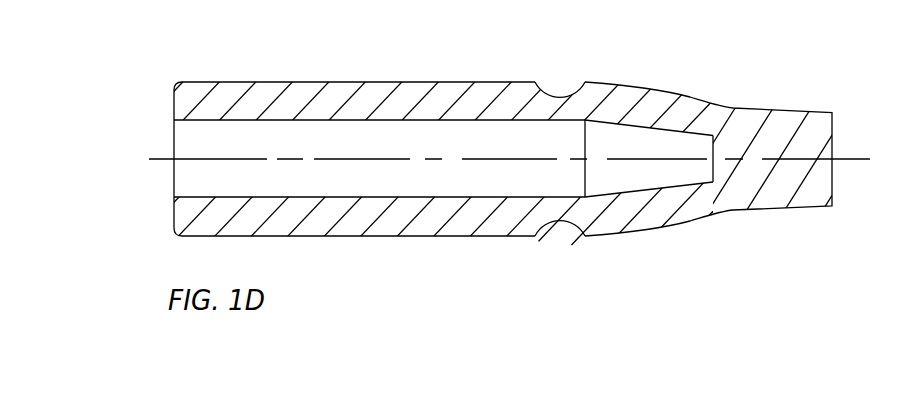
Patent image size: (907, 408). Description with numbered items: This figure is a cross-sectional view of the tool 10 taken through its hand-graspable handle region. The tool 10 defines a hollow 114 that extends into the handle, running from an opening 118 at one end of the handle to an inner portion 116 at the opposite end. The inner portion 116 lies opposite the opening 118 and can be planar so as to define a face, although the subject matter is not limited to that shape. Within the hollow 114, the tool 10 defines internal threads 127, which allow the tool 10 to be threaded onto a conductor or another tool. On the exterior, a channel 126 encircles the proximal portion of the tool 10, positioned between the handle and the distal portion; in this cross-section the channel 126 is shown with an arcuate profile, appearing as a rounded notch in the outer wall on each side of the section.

The tool 10 is at (223, 82).
The hollow 114 is at (197, 145).
The inner portion 116 is at (713, 177).
The opening 118 is at (174, 183).
The channel 126 is at (540, 89).
The internal threads 127 is at (670, 131).